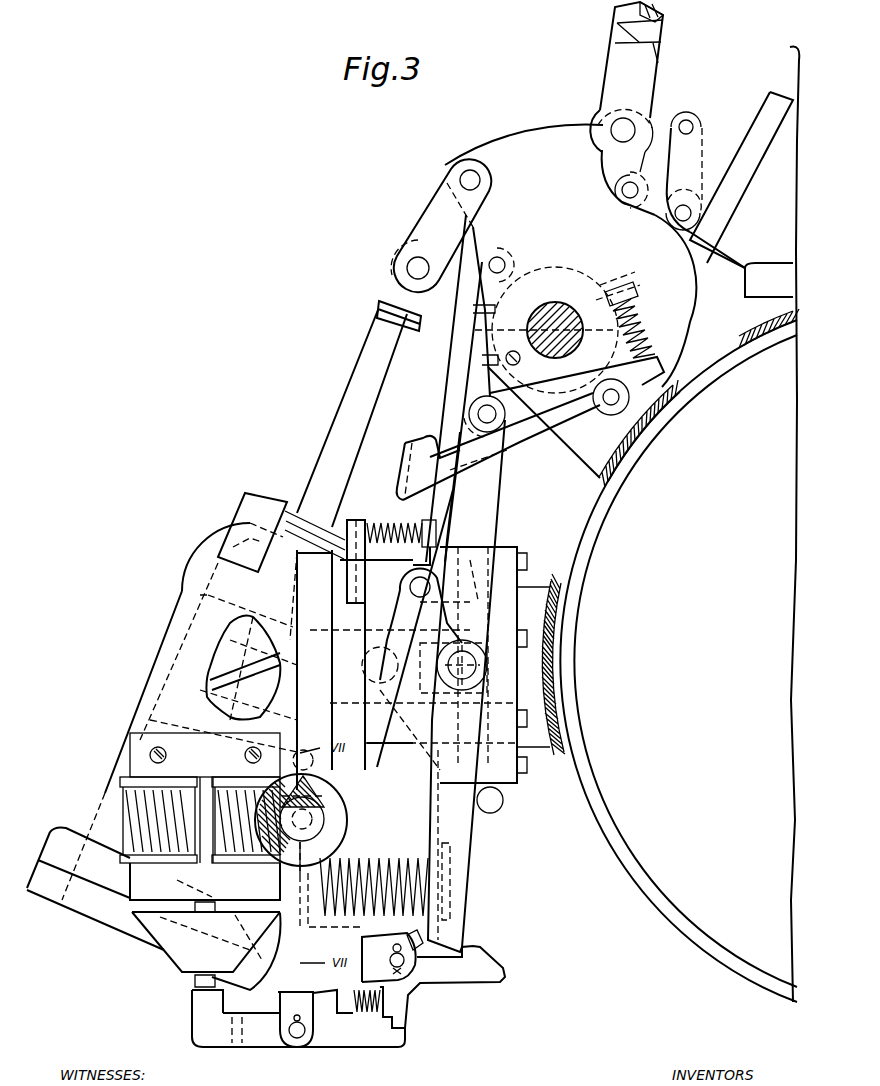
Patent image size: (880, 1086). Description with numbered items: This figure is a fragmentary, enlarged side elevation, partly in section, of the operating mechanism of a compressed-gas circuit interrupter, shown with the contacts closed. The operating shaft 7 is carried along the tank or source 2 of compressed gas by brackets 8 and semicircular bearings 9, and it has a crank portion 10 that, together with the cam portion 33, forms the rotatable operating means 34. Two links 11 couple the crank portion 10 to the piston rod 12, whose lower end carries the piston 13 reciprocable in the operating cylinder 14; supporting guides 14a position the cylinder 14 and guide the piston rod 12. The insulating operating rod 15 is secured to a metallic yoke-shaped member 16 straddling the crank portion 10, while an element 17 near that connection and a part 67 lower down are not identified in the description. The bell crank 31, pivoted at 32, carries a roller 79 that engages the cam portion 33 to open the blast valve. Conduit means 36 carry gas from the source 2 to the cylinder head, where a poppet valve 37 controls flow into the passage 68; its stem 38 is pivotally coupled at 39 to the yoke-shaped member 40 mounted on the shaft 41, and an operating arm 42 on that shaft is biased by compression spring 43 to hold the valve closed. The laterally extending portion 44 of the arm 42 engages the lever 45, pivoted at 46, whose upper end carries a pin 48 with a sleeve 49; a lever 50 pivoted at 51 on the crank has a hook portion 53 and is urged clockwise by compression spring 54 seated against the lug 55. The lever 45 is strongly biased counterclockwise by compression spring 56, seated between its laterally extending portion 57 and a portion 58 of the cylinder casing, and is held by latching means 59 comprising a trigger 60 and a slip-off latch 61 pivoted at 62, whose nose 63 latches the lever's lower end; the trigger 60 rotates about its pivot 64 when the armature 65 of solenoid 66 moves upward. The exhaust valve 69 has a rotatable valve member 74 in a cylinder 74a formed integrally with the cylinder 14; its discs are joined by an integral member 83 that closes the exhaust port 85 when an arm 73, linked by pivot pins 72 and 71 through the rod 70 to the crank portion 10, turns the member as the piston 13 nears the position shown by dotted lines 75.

The tank or source of compressed gas 2 is at (578, 528).
The operating shaft 7 is at (564, 306).
The brackets 8 is at (586, 470).
The bearings 9 is at (546, 323).
The crank portion 10 is at (542, 162).
The links 11 is at (420, 210).
The piston rod 12 is at (343, 399).
The piston 13 is at (240, 667).
The operating cylinder 14 is at (150, 660).
The supporting guides 14a is at (258, 500).
The insulating operating rod 15 is at (666, 20).
The metallic yoke-shaped member 16 is at (655, 78).
The cylinder eye 17 is at (606, 124).
The bell crank 31 is at (684, 172).
The pivot 32 is at (692, 216).
The cam portion 33 is at (690, 270).
The rotatable operating means 34 is at (524, 261).
The conduit means 36 is at (502, 648).
The valve 37 is at (413, 657).
The stem 38 is at (433, 706).
The pivotal coupling 39 is at (365, 670).
The yoke-shaped member 40 is at (355, 603).
The shaft 41 is at (411, 586).
The operating arm 42 is at (359, 663).
The compression spring 43 is at (406, 522).
The laterally extending portion 44 is at (503, 808).
The lever 45 is at (478, 848).
The pivot 46 is at (470, 675).
The pin 48 is at (498, 425).
The sleeve 49 is at (470, 437).
The lever 50 is at (532, 452).
The pin 51 is at (640, 440).
The hook portion 53 is at (438, 433).
The compression spring 54 is at (641, 328).
The lug 55 is at (636, 300).
The compression spring 56 is at (385, 857).
The laterally extending portion 57 is at (462, 920).
The portion of operating cylinder casing 58 is at (330, 901).
The latching means 59 is at (375, 1033).
The trigger 60 is at (345, 1048).
The latch 61 is at (468, 985).
The pivotal mounting 62 is at (406, 962).
The nose 63 is at (464, 948).
The pivotal mounting 64 is at (300, 1040).
The armature 65 is at (141, 945).
The solenoid 66 is at (200, 844).
The lever edge 67 is at (470, 795).
The passage 68 is at (351, 727).
The exhaust valve 69 is at (325, 818).
The rod 70 is at (458, 372).
The pivot pin 71 is at (505, 258).
The pivot pin 72 is at (330, 790).
The arm 73 is at (350, 815).
The rotatable valve member 74 is at (306, 765).
The cylinder 74a is at (345, 840).
The dotted lines 75 is at (205, 732).
The roller 79 is at (639, 176).
The integral member 83 is at (297, 760).
The exhaust port 85 is at (366, 807).